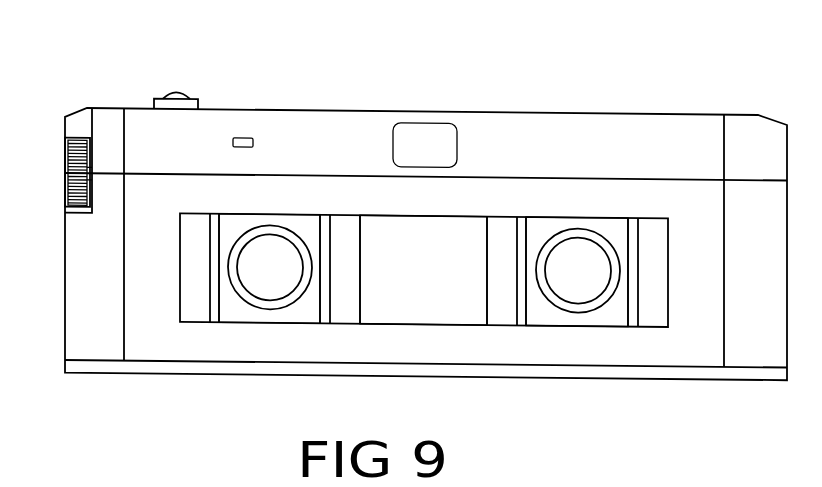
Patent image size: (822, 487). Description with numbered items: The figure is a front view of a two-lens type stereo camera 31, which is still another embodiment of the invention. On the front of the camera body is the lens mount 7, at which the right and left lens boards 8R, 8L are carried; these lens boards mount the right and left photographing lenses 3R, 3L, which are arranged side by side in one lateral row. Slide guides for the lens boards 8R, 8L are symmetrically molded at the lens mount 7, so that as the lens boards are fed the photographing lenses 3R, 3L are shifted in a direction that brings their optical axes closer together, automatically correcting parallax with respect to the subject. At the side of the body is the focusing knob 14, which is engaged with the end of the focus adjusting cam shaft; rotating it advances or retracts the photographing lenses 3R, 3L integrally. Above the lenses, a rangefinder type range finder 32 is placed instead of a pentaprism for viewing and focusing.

The two-lens type stereo camera 31 is at (245, 91).
The rangefinder type range finder 32 is at (405, 142).
The focusing knob 14 is at (66, 168).
The right photographing lens 3R is at (275, 288).
The left photographing lens 3L is at (576, 292).
The right lens board 8R is at (230, 312).
The left lens board 8L is at (610, 316).
The lens mount 7 is at (424, 310).